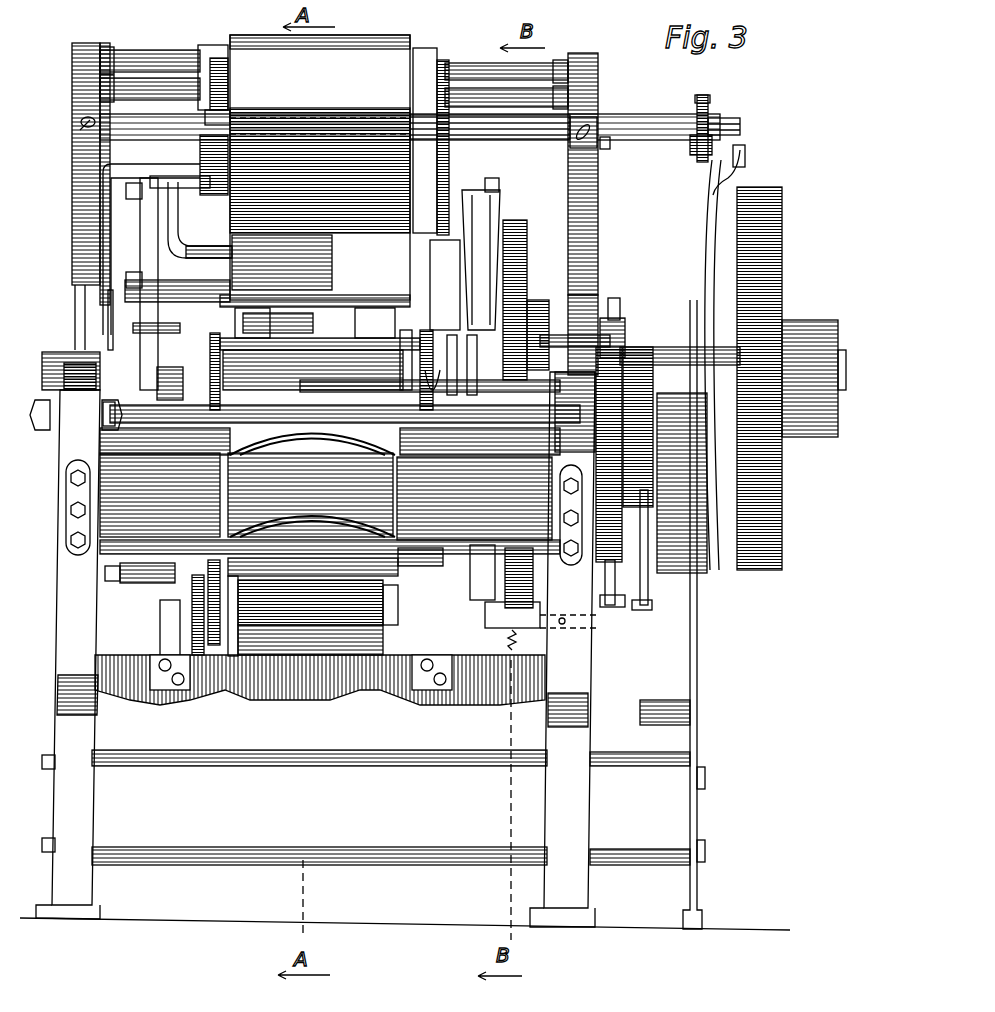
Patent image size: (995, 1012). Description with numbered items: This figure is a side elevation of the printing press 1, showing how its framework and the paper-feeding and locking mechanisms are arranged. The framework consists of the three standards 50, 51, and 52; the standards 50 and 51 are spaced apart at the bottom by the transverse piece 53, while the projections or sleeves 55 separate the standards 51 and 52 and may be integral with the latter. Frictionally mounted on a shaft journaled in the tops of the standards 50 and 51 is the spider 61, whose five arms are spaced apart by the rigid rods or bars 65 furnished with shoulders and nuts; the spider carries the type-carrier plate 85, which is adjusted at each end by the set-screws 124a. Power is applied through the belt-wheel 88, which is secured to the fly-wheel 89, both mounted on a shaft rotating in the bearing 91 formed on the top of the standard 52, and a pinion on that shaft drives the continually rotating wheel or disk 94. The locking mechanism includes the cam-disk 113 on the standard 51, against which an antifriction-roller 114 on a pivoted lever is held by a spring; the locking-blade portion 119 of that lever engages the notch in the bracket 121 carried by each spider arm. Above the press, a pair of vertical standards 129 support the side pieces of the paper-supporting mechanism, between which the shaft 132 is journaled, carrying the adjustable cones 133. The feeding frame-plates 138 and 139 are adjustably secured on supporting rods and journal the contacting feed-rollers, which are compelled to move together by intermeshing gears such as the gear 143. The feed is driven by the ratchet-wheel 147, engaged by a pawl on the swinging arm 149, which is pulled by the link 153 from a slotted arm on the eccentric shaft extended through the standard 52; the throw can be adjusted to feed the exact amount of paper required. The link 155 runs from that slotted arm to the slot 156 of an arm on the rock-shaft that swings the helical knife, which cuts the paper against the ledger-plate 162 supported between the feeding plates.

The shaft 1 is at (668, 128).
The standard 50 is at (68, 635).
The standard 51 is at (562, 649).
The standard 52 is at (683, 688).
The transverse piece 53 is at (319, 807).
The projections or sleeves 55 is at (640, 808).
The spider 61 is at (143, 252).
The rods or bars 65 is at (200, 297).
The type-carrier plate 85 is at (378, 692).
The belt-wheel 88 is at (808, 324).
The fly-wheel 89 is at (759, 378).
The bearing 91 is at (677, 347).
The wheel or disk 94 is at (530, 258).
The cam-disk 113 is at (620, 580).
The antifriction-roller 114 is at (625, 605).
The locking-blade portion 119 is at (495, 615).
The bracket 121 is at (490, 560).
The set-screws 124a is at (76, 540).
The vertical standards 129 is at (585, 305).
The shaft 132 is at (512, 125).
The cones 133 is at (218, 128).
The feeding frame-plate 138 is at (213, 92).
The feeding frame-plate 139 is at (427, 82).
The intermeshing gear 143 is at (195, 197).
The ratchet-wheel 147 is at (700, 160).
The arm 149 is at (740, 142).
The link 153 is at (728, 225).
The link 155 is at (712, 247).
The slot 156 is at (745, 168).
The ledger-plate 162 is at (466, 228).